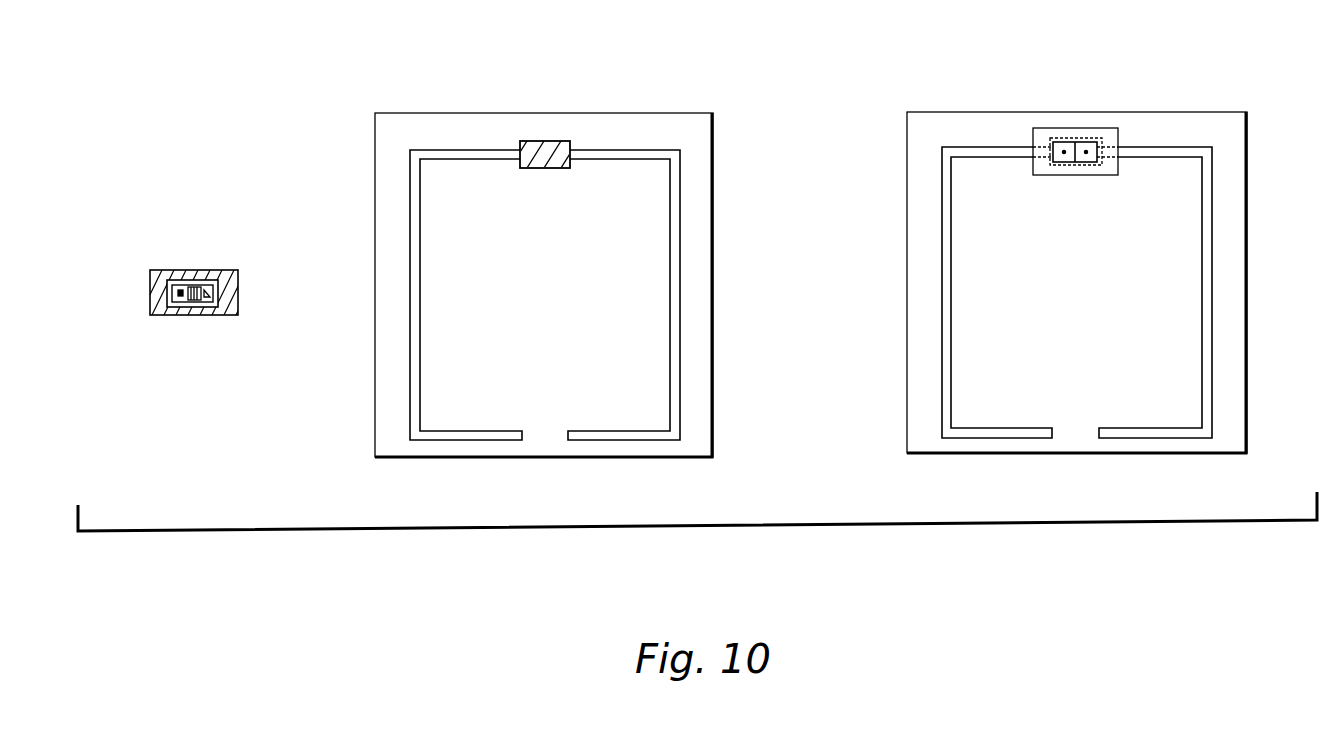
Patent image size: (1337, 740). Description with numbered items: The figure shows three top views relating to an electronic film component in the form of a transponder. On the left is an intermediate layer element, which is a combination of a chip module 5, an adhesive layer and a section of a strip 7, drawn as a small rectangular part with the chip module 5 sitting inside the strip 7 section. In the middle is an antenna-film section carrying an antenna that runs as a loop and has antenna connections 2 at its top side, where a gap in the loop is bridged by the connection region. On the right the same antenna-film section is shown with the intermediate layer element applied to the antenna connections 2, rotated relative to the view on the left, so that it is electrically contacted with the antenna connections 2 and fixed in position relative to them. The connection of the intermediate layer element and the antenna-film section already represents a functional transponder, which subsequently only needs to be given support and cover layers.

The antenna connections 2 is at (541, 149).
The chip module 5 is at (218, 316).
The strip 7 is at (150, 315).